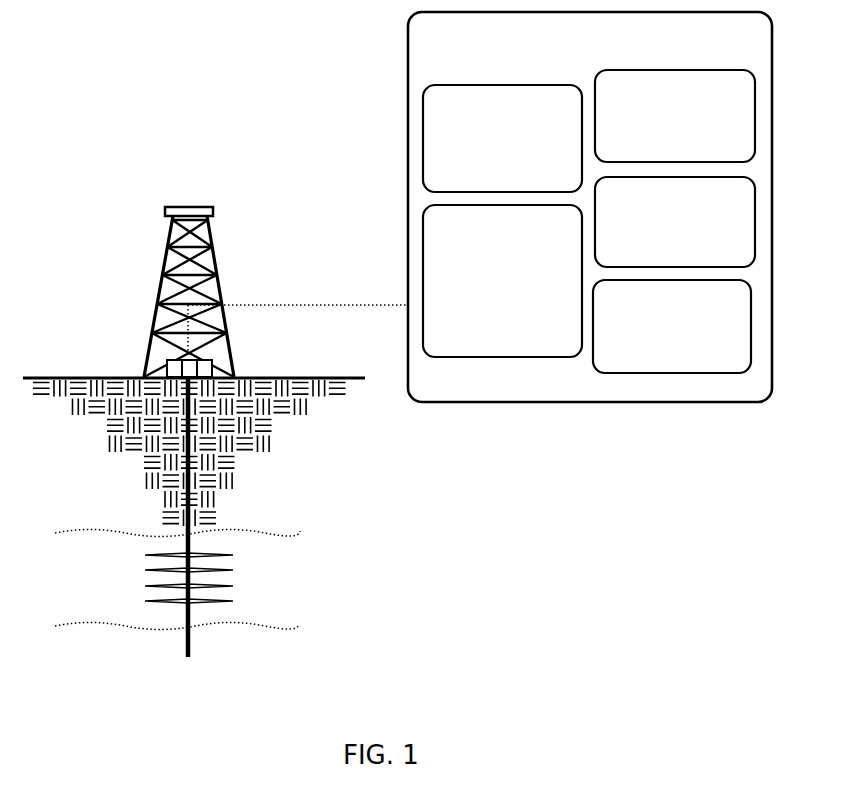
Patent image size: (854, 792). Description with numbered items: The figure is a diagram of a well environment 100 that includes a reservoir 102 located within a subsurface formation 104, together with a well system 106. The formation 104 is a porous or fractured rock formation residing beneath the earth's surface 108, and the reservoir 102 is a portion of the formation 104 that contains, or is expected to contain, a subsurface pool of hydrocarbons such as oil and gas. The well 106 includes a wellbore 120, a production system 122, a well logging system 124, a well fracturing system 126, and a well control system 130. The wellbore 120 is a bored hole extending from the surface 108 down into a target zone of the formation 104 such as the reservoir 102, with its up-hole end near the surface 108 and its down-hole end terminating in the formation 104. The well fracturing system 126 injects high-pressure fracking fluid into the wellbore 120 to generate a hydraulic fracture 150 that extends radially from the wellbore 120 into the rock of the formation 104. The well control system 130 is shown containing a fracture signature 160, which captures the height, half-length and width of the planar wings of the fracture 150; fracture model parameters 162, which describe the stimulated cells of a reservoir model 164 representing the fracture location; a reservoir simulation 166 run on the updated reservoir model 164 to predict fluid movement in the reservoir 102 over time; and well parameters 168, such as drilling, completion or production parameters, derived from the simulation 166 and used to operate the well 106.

The well environment 100 is at (93, 114).
The reservoir 102 is at (114, 591).
The subsurface formation 104 is at (116, 508).
The well system 106 is at (137, 221).
The surface 108 is at (296, 371).
The wellbore 120 is at (196, 645).
The production system 122 is at (186, 357).
The well logging system 124 is at (214, 357).
The well fracturing system 126 is at (164, 357).
The well control system 130 is at (455, 65).
The hydraulic fracture 150 is at (243, 601).
The fracture signature 160 is at (484, 172).
The fracture model parameters 162 is at (484, 327).
The reservoir model 164 is at (656, 149).
The reservoir simulation 166 is at (656, 254).
The well parameters 168 is at (653, 361).